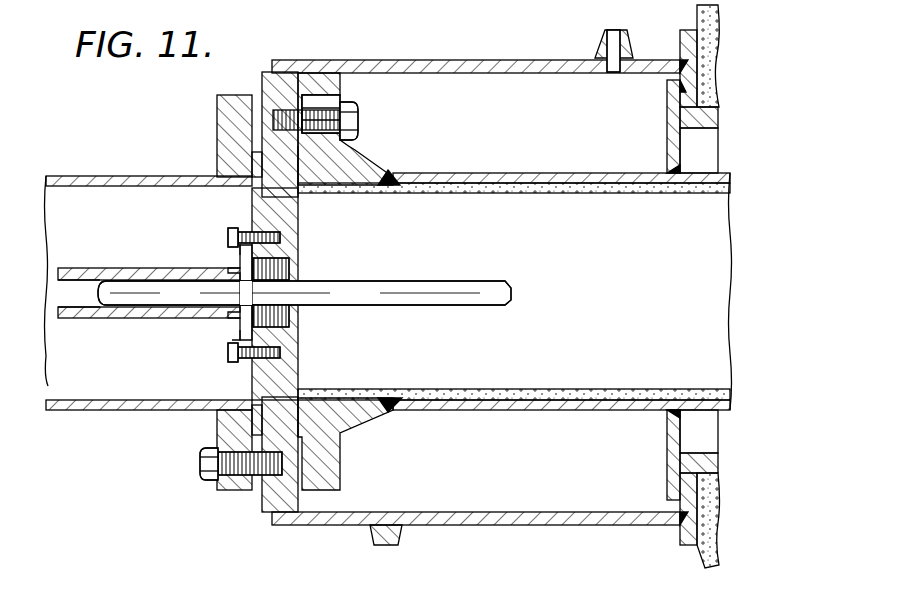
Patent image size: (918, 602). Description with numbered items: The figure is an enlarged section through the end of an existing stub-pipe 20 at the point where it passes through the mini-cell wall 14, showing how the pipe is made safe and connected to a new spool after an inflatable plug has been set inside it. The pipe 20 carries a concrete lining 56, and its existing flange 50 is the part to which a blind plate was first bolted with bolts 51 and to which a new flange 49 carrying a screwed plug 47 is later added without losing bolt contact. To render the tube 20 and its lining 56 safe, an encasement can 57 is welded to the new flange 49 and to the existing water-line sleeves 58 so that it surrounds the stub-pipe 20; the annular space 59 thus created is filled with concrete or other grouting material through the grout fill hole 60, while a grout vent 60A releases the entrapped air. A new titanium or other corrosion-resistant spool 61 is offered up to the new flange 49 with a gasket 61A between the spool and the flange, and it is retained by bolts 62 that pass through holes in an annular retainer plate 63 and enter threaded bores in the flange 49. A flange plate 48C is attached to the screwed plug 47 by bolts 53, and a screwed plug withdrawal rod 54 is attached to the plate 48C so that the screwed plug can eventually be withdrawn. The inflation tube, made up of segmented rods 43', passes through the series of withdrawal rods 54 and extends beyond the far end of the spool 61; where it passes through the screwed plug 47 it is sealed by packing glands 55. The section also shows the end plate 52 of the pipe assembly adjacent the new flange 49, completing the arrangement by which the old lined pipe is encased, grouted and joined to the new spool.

The mini-cell wall 14 is at (703, 532).
The pipe 20 is at (570, 404).
The inflation tubes 43' is at (304, 270).
The screwed plug 47 is at (262, 210).
The flange plate 48C is at (240, 334).
The new flange 49 is at (279, 88).
The flange 50 is at (335, 458).
The bolts 51 is at (357, 119).
The sleeve end plate 52 is at (296, 394).
The bolts 53 is at (228, 238).
The screwed plug withdrawal rod 54 is at (82, 268).
The packing glands 55 is at (287, 268).
The concrete lining 56 is at (500, 394).
The encasement can 57 is at (454, 68).
The water-line sleeves 58 is at (683, 40).
The annular space 59 is at (580, 135).
The grout fill hole 60 is at (370, 537).
The grout vent 60A is at (607, 45).
The spool 61 is at (128, 176).
The gasket 61A is at (257, 422).
The bolts 62 is at (200, 463).
The annular retainer plate 63 is at (228, 112).